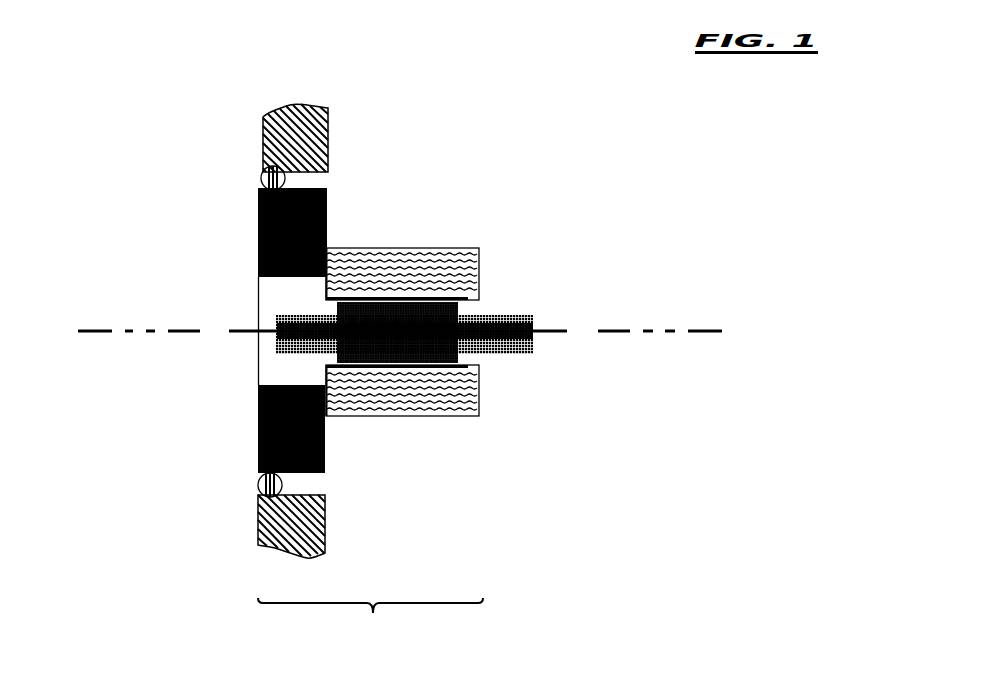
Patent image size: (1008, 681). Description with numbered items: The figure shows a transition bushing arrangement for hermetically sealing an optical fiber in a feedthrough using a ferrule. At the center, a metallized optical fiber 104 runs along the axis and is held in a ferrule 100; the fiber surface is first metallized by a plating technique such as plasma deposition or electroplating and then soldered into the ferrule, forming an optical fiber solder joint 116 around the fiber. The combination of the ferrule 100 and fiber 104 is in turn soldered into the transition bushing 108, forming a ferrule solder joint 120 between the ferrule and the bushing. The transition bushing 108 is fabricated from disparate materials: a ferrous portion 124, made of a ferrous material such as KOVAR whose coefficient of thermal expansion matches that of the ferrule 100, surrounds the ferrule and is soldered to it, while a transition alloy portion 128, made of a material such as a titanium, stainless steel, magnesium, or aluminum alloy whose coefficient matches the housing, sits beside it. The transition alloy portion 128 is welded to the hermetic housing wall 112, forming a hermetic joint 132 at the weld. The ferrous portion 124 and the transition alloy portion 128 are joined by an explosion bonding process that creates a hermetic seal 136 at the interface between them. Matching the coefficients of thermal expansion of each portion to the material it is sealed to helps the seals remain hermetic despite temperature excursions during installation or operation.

The ferrule 100 is at (548, 314).
The optical fiber 104 is at (170, 322).
The transition bushing 108 is at (370, 630).
The housing 112 is at (253, 525).
The optical fiber solder joint 116 is at (481, 318).
The ferrule solder joint 120 is at (362, 290).
The ferrous portion 124 is at (480, 393).
The transition alloy portion 128 is at (245, 436).
The hermetic joint 132 is at (251, 168).
The hermetic seal 136 is at (328, 408).